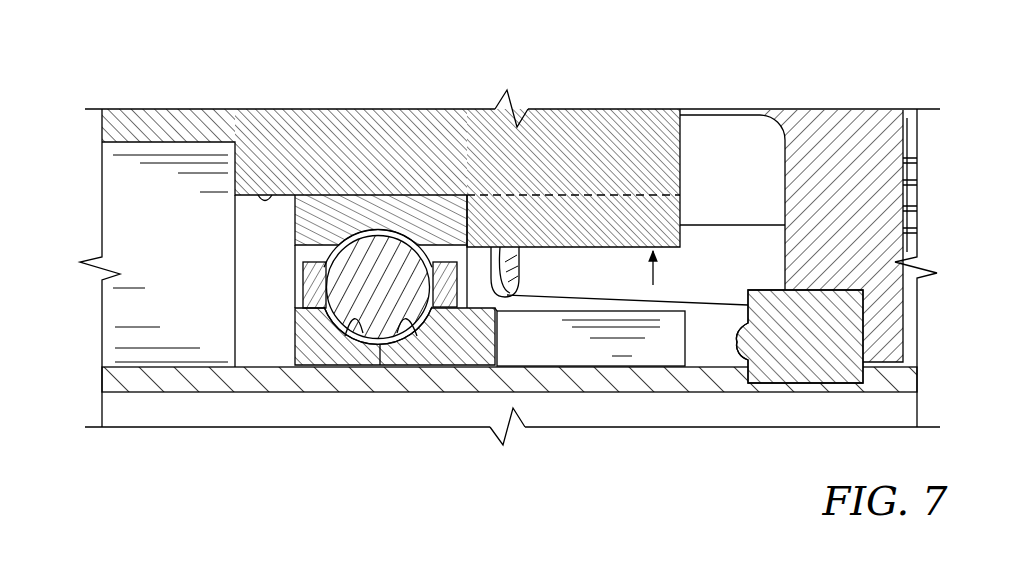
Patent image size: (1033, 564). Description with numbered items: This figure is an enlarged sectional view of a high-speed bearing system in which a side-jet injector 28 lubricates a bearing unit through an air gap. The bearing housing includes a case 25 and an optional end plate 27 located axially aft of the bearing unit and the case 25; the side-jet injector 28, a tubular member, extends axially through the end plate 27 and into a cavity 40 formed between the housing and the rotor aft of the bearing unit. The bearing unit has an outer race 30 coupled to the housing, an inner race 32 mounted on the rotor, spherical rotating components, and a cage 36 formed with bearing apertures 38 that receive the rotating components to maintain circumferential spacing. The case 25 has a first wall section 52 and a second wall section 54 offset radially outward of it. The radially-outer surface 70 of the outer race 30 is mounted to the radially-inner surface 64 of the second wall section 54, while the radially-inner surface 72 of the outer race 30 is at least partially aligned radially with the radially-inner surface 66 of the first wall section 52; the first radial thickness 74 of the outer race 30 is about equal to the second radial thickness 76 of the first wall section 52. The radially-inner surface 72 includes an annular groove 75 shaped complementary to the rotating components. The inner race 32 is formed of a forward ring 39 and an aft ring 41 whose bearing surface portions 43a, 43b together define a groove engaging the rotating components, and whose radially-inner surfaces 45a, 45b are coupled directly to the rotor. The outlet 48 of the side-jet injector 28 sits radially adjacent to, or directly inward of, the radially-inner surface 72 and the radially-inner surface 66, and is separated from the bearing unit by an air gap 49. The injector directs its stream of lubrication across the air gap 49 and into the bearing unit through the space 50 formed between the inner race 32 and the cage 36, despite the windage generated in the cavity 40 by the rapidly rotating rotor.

The case 25 is at (364, 104).
The end plate 27 is at (849, 107).
The side-jet injector 28 is at (705, 236).
The outer race 30 is at (291, 211).
The inner race 32 is at (291, 318).
The cage 36 is at (291, 273).
The bearing apertures 38 is at (333, 262).
The forward ring 39 is at (310, 371).
The cavity 40 is at (556, 312).
The aft ring 41 is at (457, 370).
The bearing surface portion 43a is at (372, 334).
The bearing surface portion 43b is at (481, 310).
The radially-inner surface 45a is at (356, 320).
The radially-inner surface 45b is at (410, 325).
The outlet 48 is at (510, 267).
The air gap 49 is at (580, 367).
The space 50 is at (451, 244).
The first wall section 52 is at (588, 218).
The second wall section 54 is at (522, 147).
The radially-inner surface 64 is at (262, 197).
The radially-inner surface 66 is at (670, 249).
The radially-outer surface 70 is at (319, 195).
The radially-inner surface 72 is at (400, 236).
The first radial thickness 74 is at (441, 193).
The annular groove 75 is at (370, 226).
The second radial thickness 76 is at (653, 193).